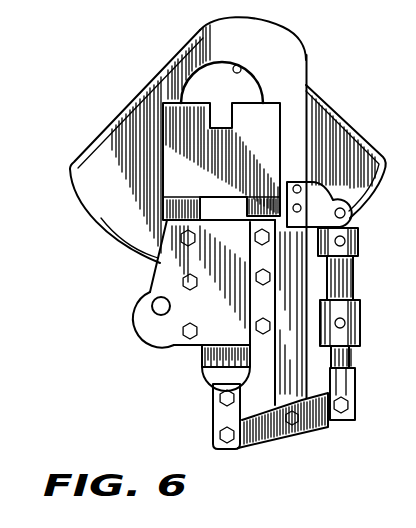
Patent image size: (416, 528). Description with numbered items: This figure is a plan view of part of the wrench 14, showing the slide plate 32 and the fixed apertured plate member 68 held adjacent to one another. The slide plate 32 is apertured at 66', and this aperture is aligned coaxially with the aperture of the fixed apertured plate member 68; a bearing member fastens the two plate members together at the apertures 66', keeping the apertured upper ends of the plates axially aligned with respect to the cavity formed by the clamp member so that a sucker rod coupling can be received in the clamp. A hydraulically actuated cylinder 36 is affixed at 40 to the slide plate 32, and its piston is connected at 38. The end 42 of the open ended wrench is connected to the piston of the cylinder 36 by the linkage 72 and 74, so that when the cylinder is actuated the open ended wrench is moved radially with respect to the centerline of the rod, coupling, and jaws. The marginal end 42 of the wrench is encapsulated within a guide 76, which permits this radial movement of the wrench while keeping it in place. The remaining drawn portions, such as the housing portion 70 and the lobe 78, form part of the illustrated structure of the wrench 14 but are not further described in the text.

The wrench 14 is at (70, 128).
The fixed apertured plate member 68 is at (115, 128).
The housing cover 70 is at (281, 37).
The aperture 66' is at (231, 75).
The cylinder affixation point 40 is at (356, 223).
The hydraulically actuated cylinder 36 is at (352, 293).
The piston connection 38 is at (353, 402).
The guide 76 is at (236, 305).
The slide plate 32 is at (292, 385).
The linkage 72 is at (259, 438).
The end of open ended wrench 42 is at (212, 392).
The linkage 74 is at (212, 438).
The pivot lobe 78 is at (150, 326).